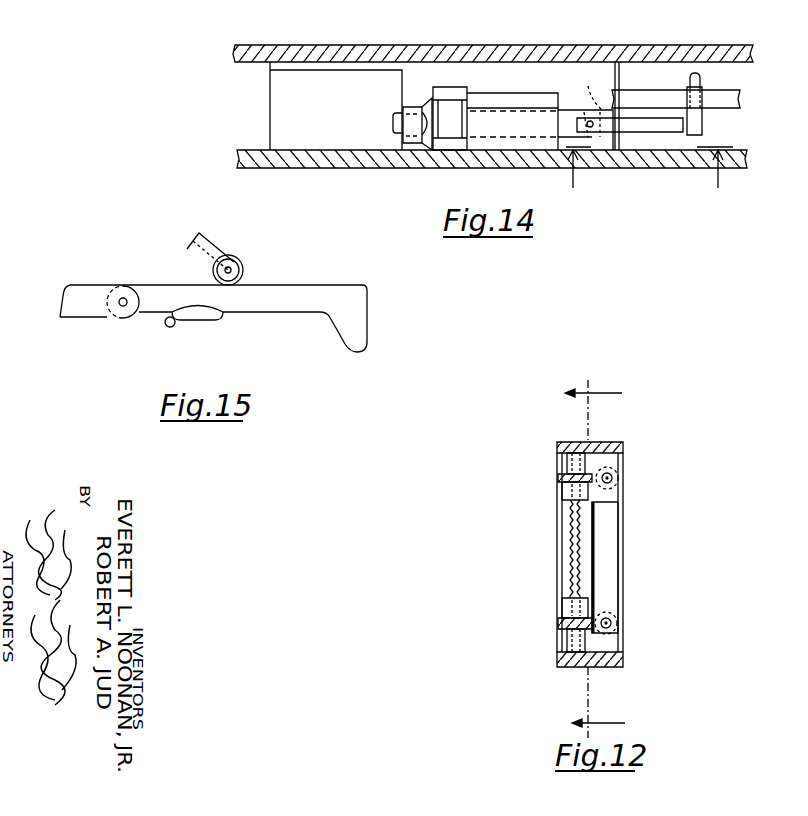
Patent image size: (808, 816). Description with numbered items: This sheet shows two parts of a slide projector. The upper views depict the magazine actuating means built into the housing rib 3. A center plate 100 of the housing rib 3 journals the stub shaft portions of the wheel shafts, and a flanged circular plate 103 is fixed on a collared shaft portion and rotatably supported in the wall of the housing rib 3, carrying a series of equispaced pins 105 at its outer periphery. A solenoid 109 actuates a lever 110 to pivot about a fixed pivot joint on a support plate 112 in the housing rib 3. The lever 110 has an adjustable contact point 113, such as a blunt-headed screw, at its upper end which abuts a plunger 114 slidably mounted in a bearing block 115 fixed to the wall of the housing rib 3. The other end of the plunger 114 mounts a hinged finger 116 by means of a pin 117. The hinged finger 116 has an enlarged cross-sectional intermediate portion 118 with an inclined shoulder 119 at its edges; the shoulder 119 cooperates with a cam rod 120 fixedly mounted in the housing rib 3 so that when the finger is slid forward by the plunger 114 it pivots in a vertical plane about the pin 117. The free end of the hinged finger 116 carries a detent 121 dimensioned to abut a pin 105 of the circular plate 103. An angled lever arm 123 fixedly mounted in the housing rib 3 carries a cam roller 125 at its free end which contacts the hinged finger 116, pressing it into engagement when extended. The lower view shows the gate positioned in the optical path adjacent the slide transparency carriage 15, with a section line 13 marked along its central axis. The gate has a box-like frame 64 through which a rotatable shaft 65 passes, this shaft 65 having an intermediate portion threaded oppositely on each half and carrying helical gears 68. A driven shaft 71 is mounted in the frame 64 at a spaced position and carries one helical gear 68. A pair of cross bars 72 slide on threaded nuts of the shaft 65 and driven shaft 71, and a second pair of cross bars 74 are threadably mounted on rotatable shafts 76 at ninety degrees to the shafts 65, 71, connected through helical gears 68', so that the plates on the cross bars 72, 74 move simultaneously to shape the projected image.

In FIG. 14, the center plate 100 is at (452, 50).
In FIG. 14, the housing rib 3 is at (331, 167).
In FIG. 14, the solenoid 109 is at (276, 88).
In FIG. 14, the lever 110 is at (424, 104).
In FIG. 14, the support plate 112 is at (447, 88).
In FIG. 14, the adjustable contact point 113 is at (393, 121).
In FIG. 14, the plunger 114 is at (566, 108).
In FIG. 15, the plunger 114 is at (75, 287).
In FIG. 14, the bearing block 115 is at (498, 93).
In FIG. 14, the hinged finger 116 is at (656, 131).
In FIG. 15, the hinged finger 116 is at (294, 291).
In FIG. 14, the pin 117 is at (599, 106).
In FIG. 15, the pin 117 is at (124, 298).
In FIG. 15, the enlarged cross-sectional intermediate portion 118 is at (201, 321).
In FIG. 15, the inclined shoulder 119 is at (197, 305).
In FIG. 14, the cam rod 120 is at (620, 78).
In FIG. 15, the cam rod 120 is at (166, 327).
In FIG. 15, the detent 121 is at (342, 337).
In FIG. 15, the angled lever arm 123 is at (212, 249).
In FIG. 15, the cam roller 125 is at (243, 265).
In FIG. 14, the circular plate 103 is at (740, 94).
In FIG. 14, the pin 105 is at (703, 122).
In FIG. 14, the slide transparency carriage 15 is at (649, 177).
In FIG. 12, the section line 13 is at (607, 560).
In FIG. 12, the box-like frame 64 is at (624, 446).
In FIG. 12, the rotatable shaft 65 is at (614, 623).
In FIG. 12, the helical gear 68 is at (625, 554).
In FIG. 12, the helical gear 68' is at (552, 552).
In FIG. 12, the driven shaft 71 is at (612, 479).
In FIG. 12, the cross bar 72 is at (612, 537).
In FIG. 12, the cross bar 74 is at (562, 493).
In FIG. 12, the rotatable shaft 76 is at (570, 529).